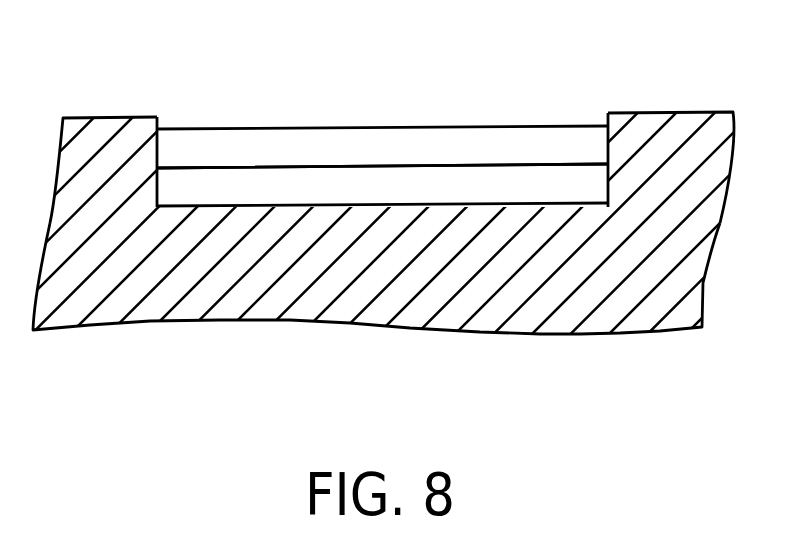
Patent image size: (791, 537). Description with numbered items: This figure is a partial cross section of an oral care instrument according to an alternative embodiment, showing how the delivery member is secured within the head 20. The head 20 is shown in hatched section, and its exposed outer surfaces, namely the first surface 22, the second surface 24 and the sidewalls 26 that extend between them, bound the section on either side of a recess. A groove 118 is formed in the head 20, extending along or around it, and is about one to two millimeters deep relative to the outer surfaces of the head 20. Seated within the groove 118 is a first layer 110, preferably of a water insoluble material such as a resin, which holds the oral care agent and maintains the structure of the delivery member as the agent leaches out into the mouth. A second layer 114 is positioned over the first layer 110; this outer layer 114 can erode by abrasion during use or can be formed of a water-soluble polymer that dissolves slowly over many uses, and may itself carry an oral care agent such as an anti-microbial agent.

The head 20 is at (370, 320).
The first surface 22 is at (392, 131).
The second surface 24 is at (392, 131).
The sidewalls 26 is at (117, 118).
The first layer 110 is at (387, 175).
The second layer 114 is at (305, 138).
The groove 118 is at (160, 121).